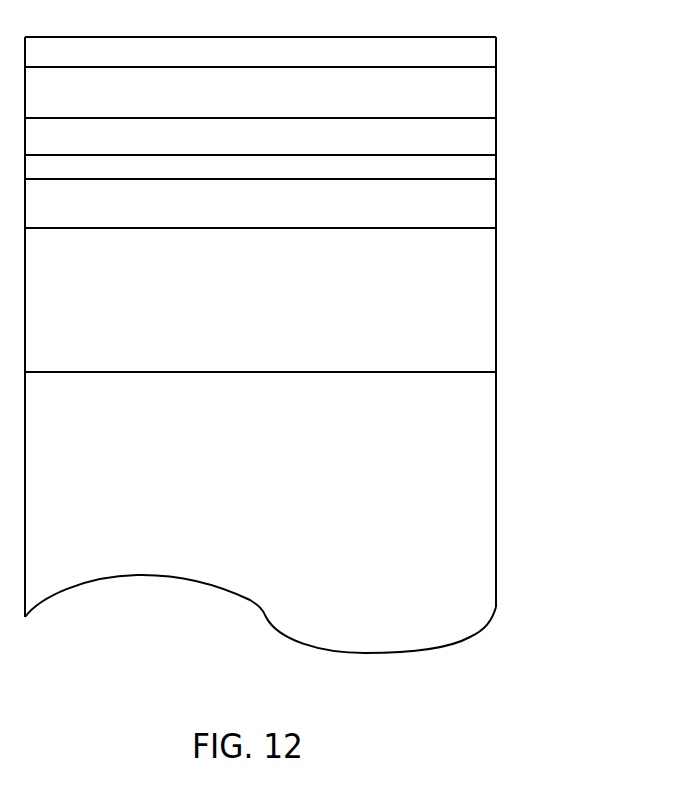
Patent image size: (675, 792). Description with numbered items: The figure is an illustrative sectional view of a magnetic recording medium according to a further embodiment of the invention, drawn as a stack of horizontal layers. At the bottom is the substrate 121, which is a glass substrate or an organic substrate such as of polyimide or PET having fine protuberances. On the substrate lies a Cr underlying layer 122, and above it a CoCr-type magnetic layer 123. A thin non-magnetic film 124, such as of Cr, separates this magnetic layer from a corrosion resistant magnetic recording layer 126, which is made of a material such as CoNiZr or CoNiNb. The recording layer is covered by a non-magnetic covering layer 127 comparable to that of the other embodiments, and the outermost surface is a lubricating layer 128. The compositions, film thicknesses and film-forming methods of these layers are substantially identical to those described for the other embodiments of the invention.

The substrate 121 is at (496, 545).
The Cr underlying layer 122 is at (496, 312).
The CoCr-type magnetic layer 123 is at (496, 213).
The non-magnetic film 124 is at (496, 164).
The corrosion resistant magnetic recording layer 126 is at (496, 140).
The non-magnetic covering layer 127 is at (496, 103).
The lubricating layer 128 is at (496, 51).